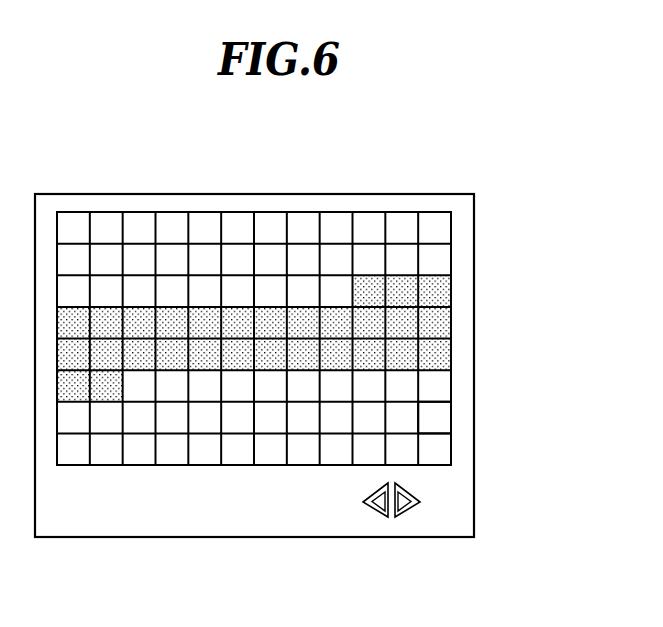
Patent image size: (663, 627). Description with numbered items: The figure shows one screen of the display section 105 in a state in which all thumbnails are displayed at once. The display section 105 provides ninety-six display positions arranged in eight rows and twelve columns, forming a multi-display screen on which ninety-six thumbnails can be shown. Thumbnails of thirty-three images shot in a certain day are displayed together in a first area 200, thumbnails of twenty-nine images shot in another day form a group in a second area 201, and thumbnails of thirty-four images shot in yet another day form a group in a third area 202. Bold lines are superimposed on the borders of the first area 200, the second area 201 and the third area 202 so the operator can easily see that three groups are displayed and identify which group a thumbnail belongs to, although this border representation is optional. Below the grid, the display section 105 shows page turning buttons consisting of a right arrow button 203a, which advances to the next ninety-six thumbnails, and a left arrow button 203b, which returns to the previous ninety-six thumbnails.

The display section 105 is at (389, 194).
The first area 200 is at (452, 255).
The second area 201 is at (452, 331).
The third area 202 is at (452, 424).
The right arrow button 203a is at (410, 517).
The left arrow button 203b is at (371, 517).